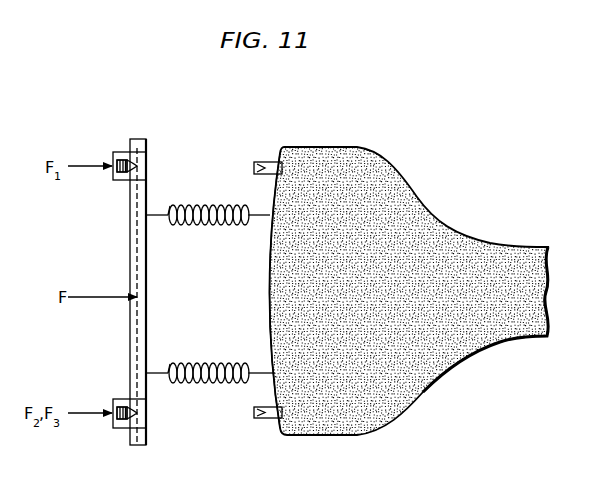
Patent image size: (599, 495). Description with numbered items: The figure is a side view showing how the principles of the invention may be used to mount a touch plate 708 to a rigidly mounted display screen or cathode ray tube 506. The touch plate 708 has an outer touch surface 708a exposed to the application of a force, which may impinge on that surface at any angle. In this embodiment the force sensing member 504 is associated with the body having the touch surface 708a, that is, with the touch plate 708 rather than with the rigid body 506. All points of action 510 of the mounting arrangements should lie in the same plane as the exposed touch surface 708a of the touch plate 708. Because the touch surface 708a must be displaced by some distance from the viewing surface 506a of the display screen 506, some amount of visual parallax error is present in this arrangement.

The point of action 510 is at (138, 167).
The touch plate 708 is at (117, 292).
The outer touch surface 708a is at (137, 359).
The force sensing member 504 is at (124, 428).
The display screen or cathode ray tube 506 is at (386, 291).
The outer surface (viewing surface) 506a is at (268, 307).